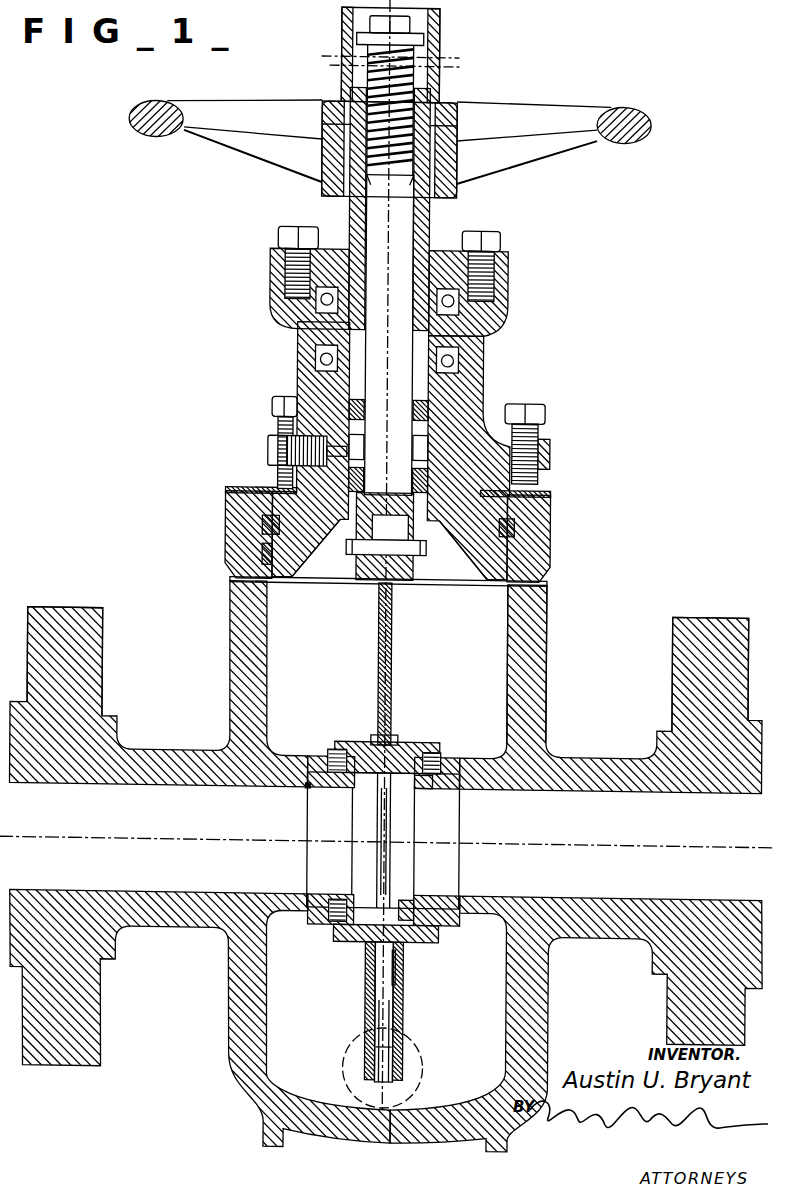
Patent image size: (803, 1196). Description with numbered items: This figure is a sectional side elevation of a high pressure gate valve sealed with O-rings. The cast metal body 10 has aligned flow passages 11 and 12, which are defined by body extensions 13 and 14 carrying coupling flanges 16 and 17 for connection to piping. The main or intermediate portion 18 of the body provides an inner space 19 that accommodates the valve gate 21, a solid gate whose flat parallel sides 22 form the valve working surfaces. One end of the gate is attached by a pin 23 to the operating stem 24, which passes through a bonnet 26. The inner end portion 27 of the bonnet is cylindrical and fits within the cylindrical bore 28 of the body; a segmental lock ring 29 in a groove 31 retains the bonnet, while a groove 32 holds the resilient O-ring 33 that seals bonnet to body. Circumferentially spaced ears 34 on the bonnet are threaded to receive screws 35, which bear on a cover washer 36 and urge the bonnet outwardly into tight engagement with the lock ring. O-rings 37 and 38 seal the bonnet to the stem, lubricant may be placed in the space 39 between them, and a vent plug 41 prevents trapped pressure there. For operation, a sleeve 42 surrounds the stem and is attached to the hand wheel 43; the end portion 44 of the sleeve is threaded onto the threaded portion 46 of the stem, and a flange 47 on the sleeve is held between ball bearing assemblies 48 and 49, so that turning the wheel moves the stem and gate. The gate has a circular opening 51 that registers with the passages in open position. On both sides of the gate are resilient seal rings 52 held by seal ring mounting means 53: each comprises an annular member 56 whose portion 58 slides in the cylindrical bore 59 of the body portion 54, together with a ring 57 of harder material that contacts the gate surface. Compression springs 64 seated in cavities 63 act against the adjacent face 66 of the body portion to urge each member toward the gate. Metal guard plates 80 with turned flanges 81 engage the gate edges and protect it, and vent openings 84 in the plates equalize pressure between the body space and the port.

The body 10 is at (386, 866).
The flow passage 11 is at (158, 683).
The flow passage 12 is at (576, 1021).
The body extension 13 is at (200, 1018).
The body extension 14 is at (610, 689).
The coupling flange 16 is at (65, 646).
The coupling flange 17 is at (710, 662).
The main or intermediate portion of the body 18 is at (556, 663).
The inner space 19 is at (540, 665).
The valve gate 21 is at (403, 701).
The flat parallel sides 22 is at (386, 745).
The pin 23 is at (395, 553).
The operating stem 24 is at (428, 335).
The bonnet 26 is at (403, 450).
The inner end portion of the bonnet 27 is at (389, 566).
The cylindrical bore 28 is at (232, 535).
The segmental lock ring 29 is at (235, 528).
The groove 31 is at (543, 539).
The groove 32 is at (370, 582).
The resilient O-ring 33 is at (232, 553).
The ears 34 is at (564, 452).
The screws 35 is at (417, 431).
The cover washer 36 is at (388, 476).
The resilient O-ring 37 is at (404, 414).
The resilient O-ring 38 is at (404, 479).
The space 39 is at (403, 447).
The vent plug 41 is at (290, 443).
The sleeve 42 is at (365, 208).
The hand wheel 43 is at (390, 134).
The end portion of the sleeve 44 is at (407, 137).
The threaded portion of the stem 46 is at (379, 91).
The flange 47 is at (351, 319).
The ball bearing assembly 48 is at (370, 292).
The ball bearing assembly 49 is at (356, 359).
The opening 51 is at (383, 840).
The resilient seal rings 52 is at (340, 896).
The seal ring mounting means 53 is at (384, 841).
The body portion 54 is at (393, 843).
The annular member 56 is at (431, 794).
The ring 57 is at (422, 888).
The portion 58 is at (289, 797).
The cylindrical bore 59 is at (316, 750).
The cavities 63 is at (387, 745).
The compression springs 64 is at (382, 946).
The adjacent face 66 is at (444, 749).
The metal plates 80 is at (387, 1011).
The turned flanges 81 is at (363, 1012).
The vent openings 84 is at (416, 967).